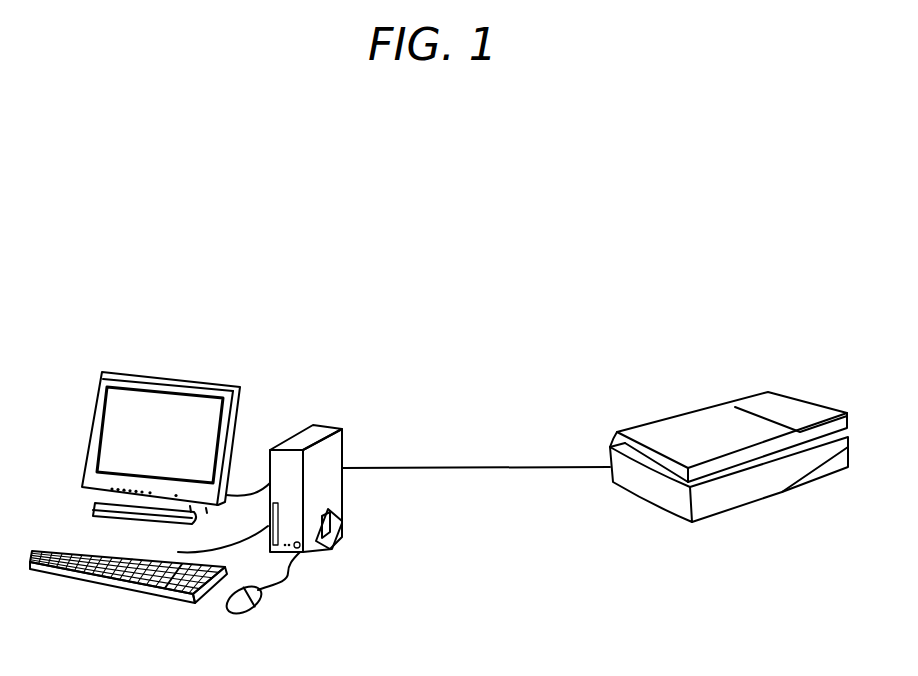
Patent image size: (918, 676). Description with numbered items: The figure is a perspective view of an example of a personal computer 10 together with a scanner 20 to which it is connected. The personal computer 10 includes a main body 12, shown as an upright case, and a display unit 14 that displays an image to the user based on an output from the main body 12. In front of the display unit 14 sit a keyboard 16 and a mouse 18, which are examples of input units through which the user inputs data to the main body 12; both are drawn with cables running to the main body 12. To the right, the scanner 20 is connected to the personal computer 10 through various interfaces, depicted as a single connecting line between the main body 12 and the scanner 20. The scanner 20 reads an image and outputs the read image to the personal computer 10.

The personal computer 10 is at (90, 330).
The main body 12 is at (299, 433).
The display unit 14 is at (97, 403).
The keyboard 16 is at (92, 582).
The mouse 18 is at (229, 616).
The scanner 20 is at (795, 337).